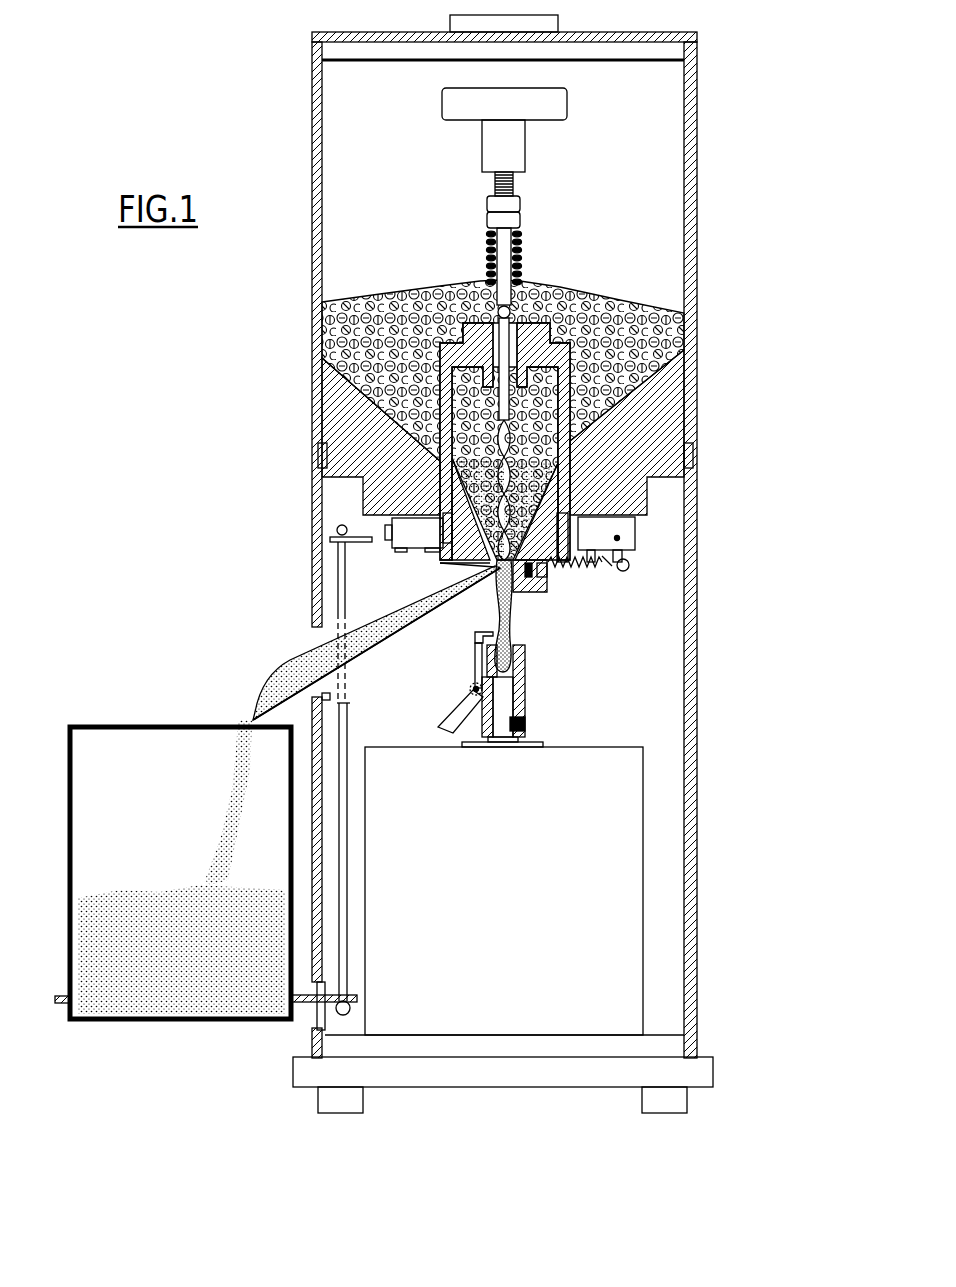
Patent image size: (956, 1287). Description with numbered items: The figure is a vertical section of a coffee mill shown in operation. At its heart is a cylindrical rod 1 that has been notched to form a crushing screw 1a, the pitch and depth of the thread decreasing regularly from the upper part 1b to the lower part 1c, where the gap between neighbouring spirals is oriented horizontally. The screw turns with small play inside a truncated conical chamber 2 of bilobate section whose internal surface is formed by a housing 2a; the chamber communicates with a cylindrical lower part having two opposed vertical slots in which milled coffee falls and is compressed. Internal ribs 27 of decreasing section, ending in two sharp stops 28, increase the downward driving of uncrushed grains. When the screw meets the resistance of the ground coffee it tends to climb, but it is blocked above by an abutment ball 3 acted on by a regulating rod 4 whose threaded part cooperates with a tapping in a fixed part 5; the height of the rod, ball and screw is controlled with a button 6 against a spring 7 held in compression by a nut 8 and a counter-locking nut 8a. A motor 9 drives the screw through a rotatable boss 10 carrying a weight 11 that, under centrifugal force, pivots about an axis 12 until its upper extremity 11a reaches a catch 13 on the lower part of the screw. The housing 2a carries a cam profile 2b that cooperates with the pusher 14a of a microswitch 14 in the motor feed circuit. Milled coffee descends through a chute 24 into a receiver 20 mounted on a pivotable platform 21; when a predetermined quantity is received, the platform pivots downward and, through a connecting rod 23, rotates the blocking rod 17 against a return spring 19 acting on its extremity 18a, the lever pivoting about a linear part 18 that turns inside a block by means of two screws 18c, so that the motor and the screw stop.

The cylindrical rod 1 is at (507, 411).
The crushing screw 1a is at (572, 440).
The upper part of the crushing screw 1b is at (572, 443).
The lower part of the crushing screw 1c is at (515, 603).
The truncated conical chamber 2 is at (450, 462).
The housing 2a is at (450, 478).
The cam profile 2b is at (443, 515).
The abutment ball 3 is at (542, 280).
The regulating rod 4 is at (520, 245).
The fixed part 5 is at (550, 354).
The button 6 is at (557, 108).
The spring 7 is at (516, 267).
The nut 8 is at (514, 207).
The counter-locking nut 8a is at (514, 222).
The motor 9 is at (615, 940).
The rotatable boss 10 is at (525, 678).
The weight 11 is at (450, 723).
The upper extremity of the weight 11a is at (483, 632).
The axis 12 is at (473, 689).
The catch 13 is at (478, 650).
The microswitch 14 is at (410, 538).
The pusher 14a is at (443, 527).
The blocking rod (transmission lever) 17 is at (340, 537).
The linear part 18 is at (620, 538).
The extremity of the lever 18a is at (630, 567).
The screws 18c is at (602, 558).
The return spring 19 is at (580, 565).
The receiver 20 is at (68, 782).
The pivotable platform 21 is at (60, 998).
The connecting rod 23 is at (338, 580).
The chute 24 is at (317, 657).
The internal ribs 27 is at (487, 565).
The sharp stops 28 is at (493, 570).